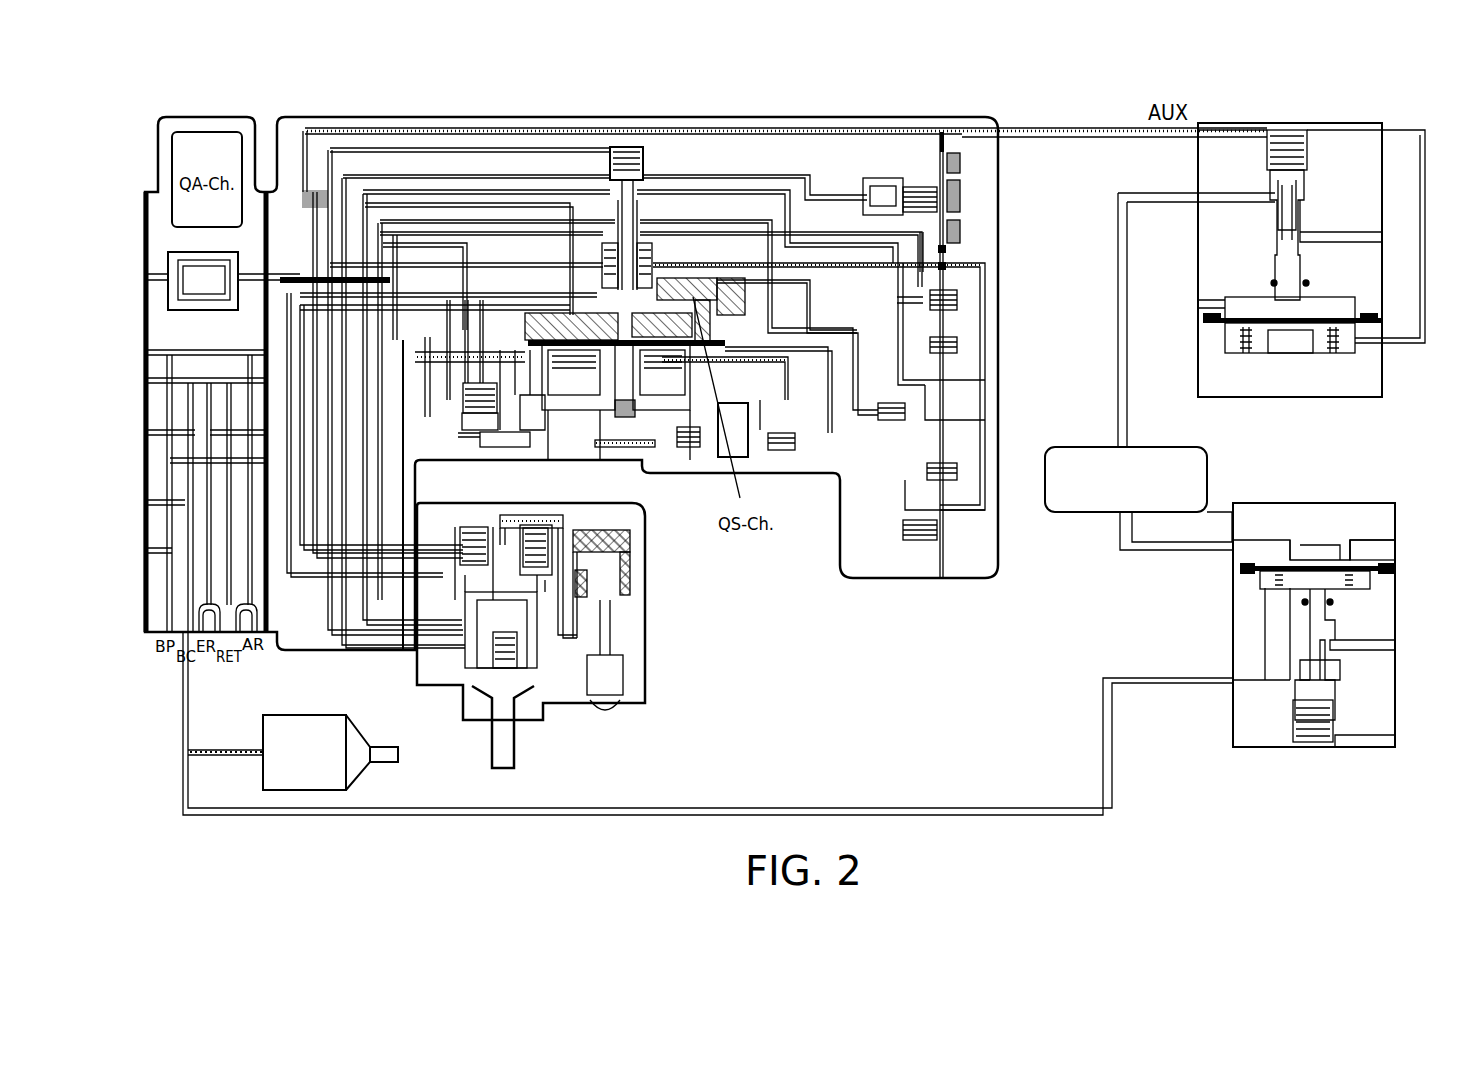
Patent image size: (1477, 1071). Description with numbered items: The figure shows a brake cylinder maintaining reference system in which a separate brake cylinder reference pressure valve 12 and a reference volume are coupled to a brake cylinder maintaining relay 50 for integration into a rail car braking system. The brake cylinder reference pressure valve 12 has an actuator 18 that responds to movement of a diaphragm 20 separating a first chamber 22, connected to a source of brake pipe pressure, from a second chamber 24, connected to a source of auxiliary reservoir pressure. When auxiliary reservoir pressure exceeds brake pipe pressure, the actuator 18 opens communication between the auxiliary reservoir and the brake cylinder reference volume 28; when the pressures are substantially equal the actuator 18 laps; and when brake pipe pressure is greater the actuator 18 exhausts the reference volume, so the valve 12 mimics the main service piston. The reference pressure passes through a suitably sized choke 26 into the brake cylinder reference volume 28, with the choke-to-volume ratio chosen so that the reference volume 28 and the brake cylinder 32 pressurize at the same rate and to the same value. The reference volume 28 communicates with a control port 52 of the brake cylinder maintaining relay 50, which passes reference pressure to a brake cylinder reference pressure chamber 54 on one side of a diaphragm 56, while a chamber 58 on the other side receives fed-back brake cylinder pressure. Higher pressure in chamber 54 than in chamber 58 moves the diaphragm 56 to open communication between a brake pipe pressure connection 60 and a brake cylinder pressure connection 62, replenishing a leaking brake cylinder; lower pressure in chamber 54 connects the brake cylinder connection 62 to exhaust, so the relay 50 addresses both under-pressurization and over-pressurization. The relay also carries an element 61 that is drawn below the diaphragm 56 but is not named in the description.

The brake cylinder reference pressure valve 12 is at (1337, 120).
The actuator 18 is at (1305, 190).
The diaphragm 20 is at (1350, 345).
The first chamber 22 is at (1335, 313).
The second chamber 24 is at (1286, 342).
The choke 26 is at (1108, 430).
The brake cylinder reference volume 28 is at (1212, 455).
The brake cylinder 32 is at (360, 728).
The brake cylinder maintaining relay 50 is at (1333, 503).
The control port 52 is at (1233, 545).
The brake cylinder reference pressure chamber 54 is at (1370, 552).
The diaphragm 56 is at (1370, 572).
The brake cylinder pressure chamber 58 is at (1253, 575).
The brake pipe pressure connection 60 is at (1372, 748).
The pilot valve stem 61 is at (1335, 605).
The brake cylinder pressure connection 62 is at (1245, 685).